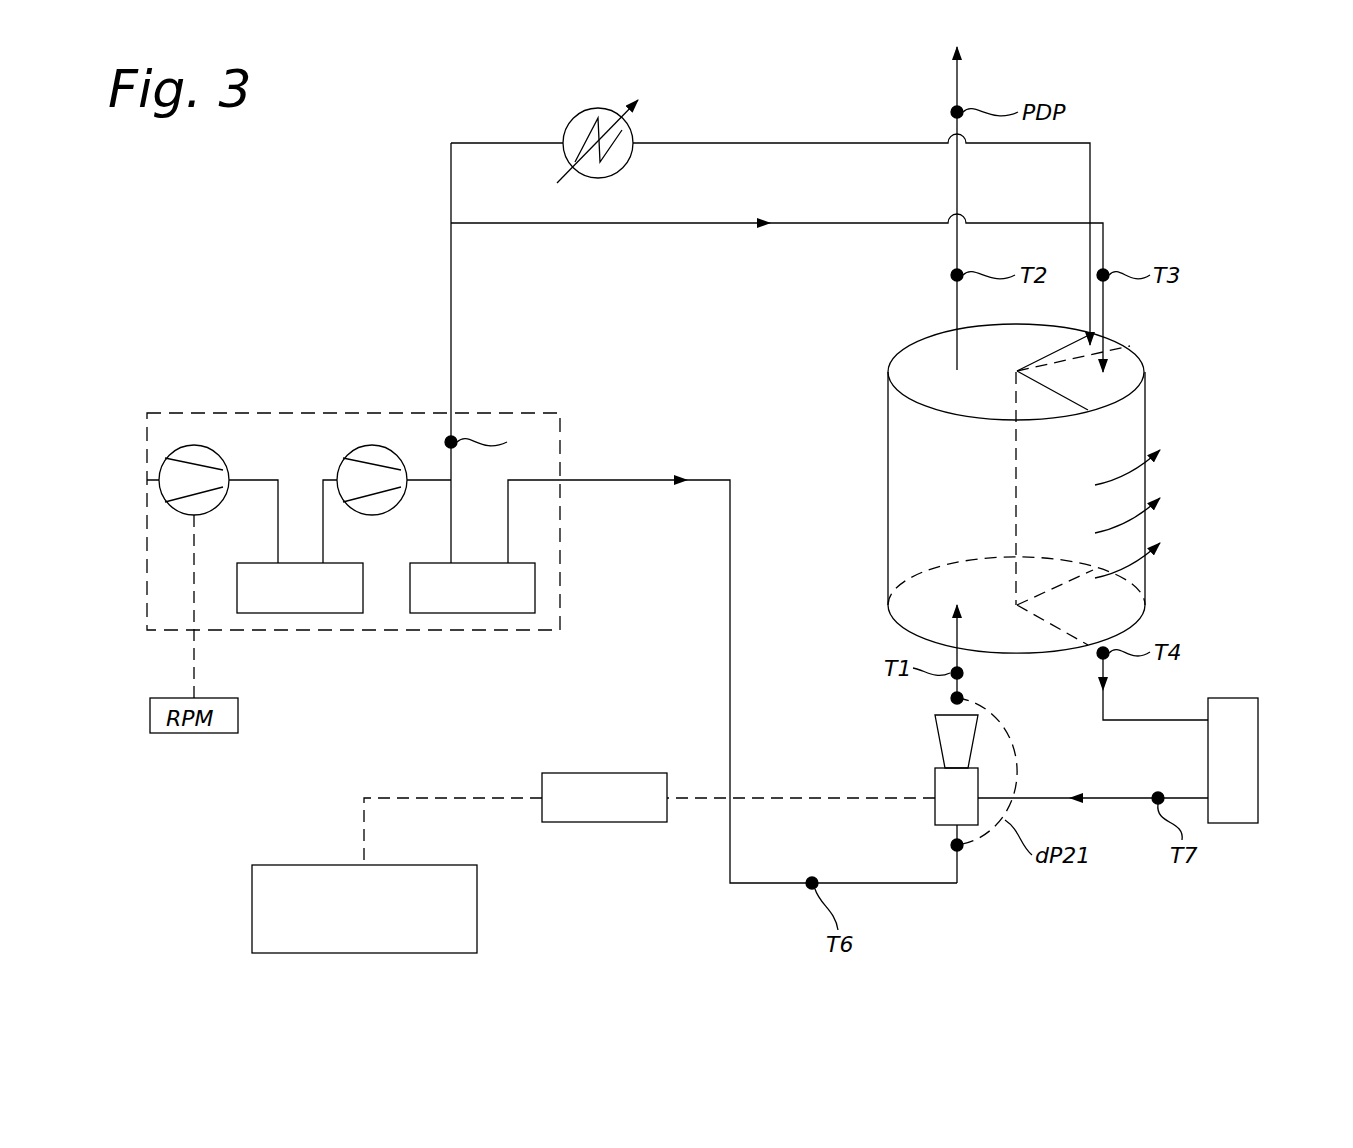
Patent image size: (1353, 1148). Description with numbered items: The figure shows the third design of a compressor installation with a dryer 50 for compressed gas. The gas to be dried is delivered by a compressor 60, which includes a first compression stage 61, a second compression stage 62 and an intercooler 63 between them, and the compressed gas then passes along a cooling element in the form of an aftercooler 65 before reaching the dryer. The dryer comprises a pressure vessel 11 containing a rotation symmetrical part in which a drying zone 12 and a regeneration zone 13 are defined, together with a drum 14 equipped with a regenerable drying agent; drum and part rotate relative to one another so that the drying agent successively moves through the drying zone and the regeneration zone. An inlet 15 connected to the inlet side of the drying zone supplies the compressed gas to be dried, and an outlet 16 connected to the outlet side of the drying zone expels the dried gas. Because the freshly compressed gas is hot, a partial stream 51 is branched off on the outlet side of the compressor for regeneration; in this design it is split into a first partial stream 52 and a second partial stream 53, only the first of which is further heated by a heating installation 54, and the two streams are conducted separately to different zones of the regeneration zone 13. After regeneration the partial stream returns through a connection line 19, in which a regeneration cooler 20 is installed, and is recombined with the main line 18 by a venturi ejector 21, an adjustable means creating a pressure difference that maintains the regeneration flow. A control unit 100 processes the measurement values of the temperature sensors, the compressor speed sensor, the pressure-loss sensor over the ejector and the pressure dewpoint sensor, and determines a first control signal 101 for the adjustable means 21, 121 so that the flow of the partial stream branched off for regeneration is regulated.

The pressure vessel 11 is at (1029, 405).
The drying zone 12 is at (918, 480).
The regeneration zone 13 is at (1130, 427).
The drum 14 is at (1143, 353).
The inlet 15 is at (957, 655).
The outlet 16 is at (957, 93).
The main line 18 is at (636, 480).
The connection line 19 is at (1170, 720).
The regeneration cooler 20 is at (1250, 718).
The venturi ejector 21 is at (940, 820).
The dryer 50 is at (679, 309).
The partial stream 51 is at (450, 352).
The first partial stream 52 is at (504, 143).
The second partial stream 53 is at (525, 223).
The heating installation 54 is at (590, 109).
The compressor 60 is at (320, 520).
The first compression stage 61 is at (170, 468).
The second compression stage 62 is at (360, 452).
The intercooler 63 is at (314, 613).
The aftercooler 65 is at (502, 613).
The control unit 100 is at (364, 909).
The first control signal 101 is at (448, 798).
The adjustable means 121 is at (604, 797).